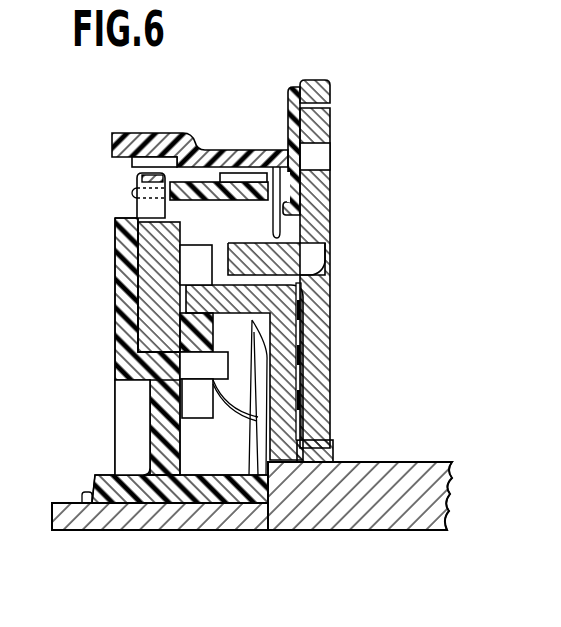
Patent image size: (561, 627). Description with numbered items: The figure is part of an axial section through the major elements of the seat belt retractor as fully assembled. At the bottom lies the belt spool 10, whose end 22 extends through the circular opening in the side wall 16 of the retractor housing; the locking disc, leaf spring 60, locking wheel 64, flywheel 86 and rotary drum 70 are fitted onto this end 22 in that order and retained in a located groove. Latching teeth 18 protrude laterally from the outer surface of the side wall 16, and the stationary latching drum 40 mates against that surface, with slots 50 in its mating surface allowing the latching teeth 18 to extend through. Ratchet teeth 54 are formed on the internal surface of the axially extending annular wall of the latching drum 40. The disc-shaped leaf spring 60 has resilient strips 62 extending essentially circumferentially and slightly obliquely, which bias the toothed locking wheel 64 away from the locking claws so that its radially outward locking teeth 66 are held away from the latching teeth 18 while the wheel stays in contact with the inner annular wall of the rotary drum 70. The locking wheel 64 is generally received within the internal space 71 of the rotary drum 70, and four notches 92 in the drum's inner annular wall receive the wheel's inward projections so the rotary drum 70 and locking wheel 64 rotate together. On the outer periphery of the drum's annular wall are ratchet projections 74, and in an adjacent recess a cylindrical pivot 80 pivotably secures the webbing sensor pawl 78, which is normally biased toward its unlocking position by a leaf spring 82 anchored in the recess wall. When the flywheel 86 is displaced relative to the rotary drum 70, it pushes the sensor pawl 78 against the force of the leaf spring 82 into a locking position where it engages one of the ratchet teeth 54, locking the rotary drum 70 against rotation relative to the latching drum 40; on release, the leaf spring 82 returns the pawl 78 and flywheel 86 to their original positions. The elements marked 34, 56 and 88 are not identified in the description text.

The belt spool 10 is at (402, 487).
The side wall 16 is at (318, 360).
The latching teeth 18 is at (278, 187).
The end of the belt spool 22 is at (147, 515).
The seal 34 is at (332, 458).
The stationary latching drum 40 is at (210, 153).
The slots 50 is at (302, 258).
The ratchet teeth 54 is at (152, 163).
The cap 56 is at (314, 103).
The leaf spring 60 is at (242, 503).
The resilient strips 62 is at (240, 409).
The locking wheel 64 is at (195, 412).
The locking teeth 66 is at (197, 260).
The rotary drum 70 is at (210, 199).
The internal space 71 is at (186, 495).
The ratchet projections 74 is at (237, 177).
The webbing sensor pawl 78 is at (147, 208).
The pivot 80 is at (133, 192).
The leaf spring 82 is at (140, 173).
The flywheel 86 is at (155, 278).
The cavity 88 is at (135, 448).
The notches 92 is at (190, 330).